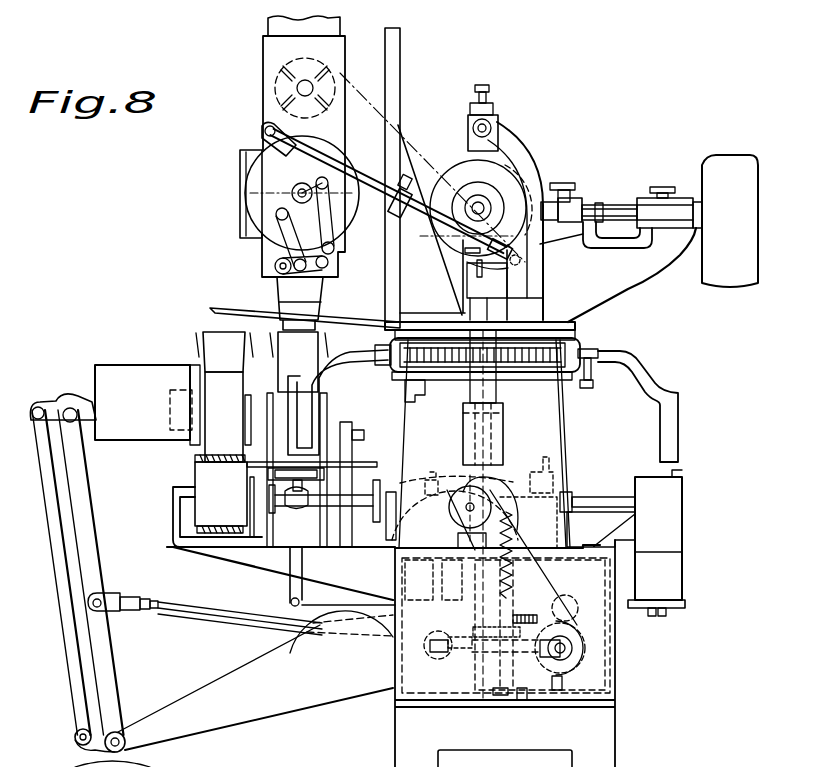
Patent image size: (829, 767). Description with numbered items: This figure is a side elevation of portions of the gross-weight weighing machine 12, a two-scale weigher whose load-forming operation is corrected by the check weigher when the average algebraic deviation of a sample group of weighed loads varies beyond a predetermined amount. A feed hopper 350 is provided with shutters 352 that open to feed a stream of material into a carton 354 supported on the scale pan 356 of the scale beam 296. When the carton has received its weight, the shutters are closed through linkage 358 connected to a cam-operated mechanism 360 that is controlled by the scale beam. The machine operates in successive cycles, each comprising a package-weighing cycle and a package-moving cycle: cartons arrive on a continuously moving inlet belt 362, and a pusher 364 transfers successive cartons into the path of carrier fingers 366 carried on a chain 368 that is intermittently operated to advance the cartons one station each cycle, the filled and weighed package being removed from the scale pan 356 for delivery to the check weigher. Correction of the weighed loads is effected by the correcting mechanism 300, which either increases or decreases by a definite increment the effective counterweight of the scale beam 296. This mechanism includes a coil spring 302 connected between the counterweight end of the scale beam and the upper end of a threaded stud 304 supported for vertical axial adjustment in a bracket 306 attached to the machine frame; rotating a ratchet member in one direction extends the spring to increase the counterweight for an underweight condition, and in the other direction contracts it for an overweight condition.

The gross-weight weighing machine 12 is at (603, 82).
The scale beam 296 is at (330, 490).
The correcting mechanism 300 is at (469, 691).
The coil spring 302 is at (503, 516).
The threaded stud 304 is at (472, 630).
The bracket 306 is at (536, 580).
The feed hopper 350 is at (262, 69).
The shutters 352 is at (268, 290).
The carton 354 is at (299, 362).
The scale pan 356 is at (260, 481).
The linkage 358 is at (266, 128).
The cam-operated mechanism 360 is at (437, 173).
The inlet belt 362 is at (196, 460).
The pusher 364 is at (147, 405).
The carrier fingers 366 is at (337, 377).
The chain 368 is at (534, 362).